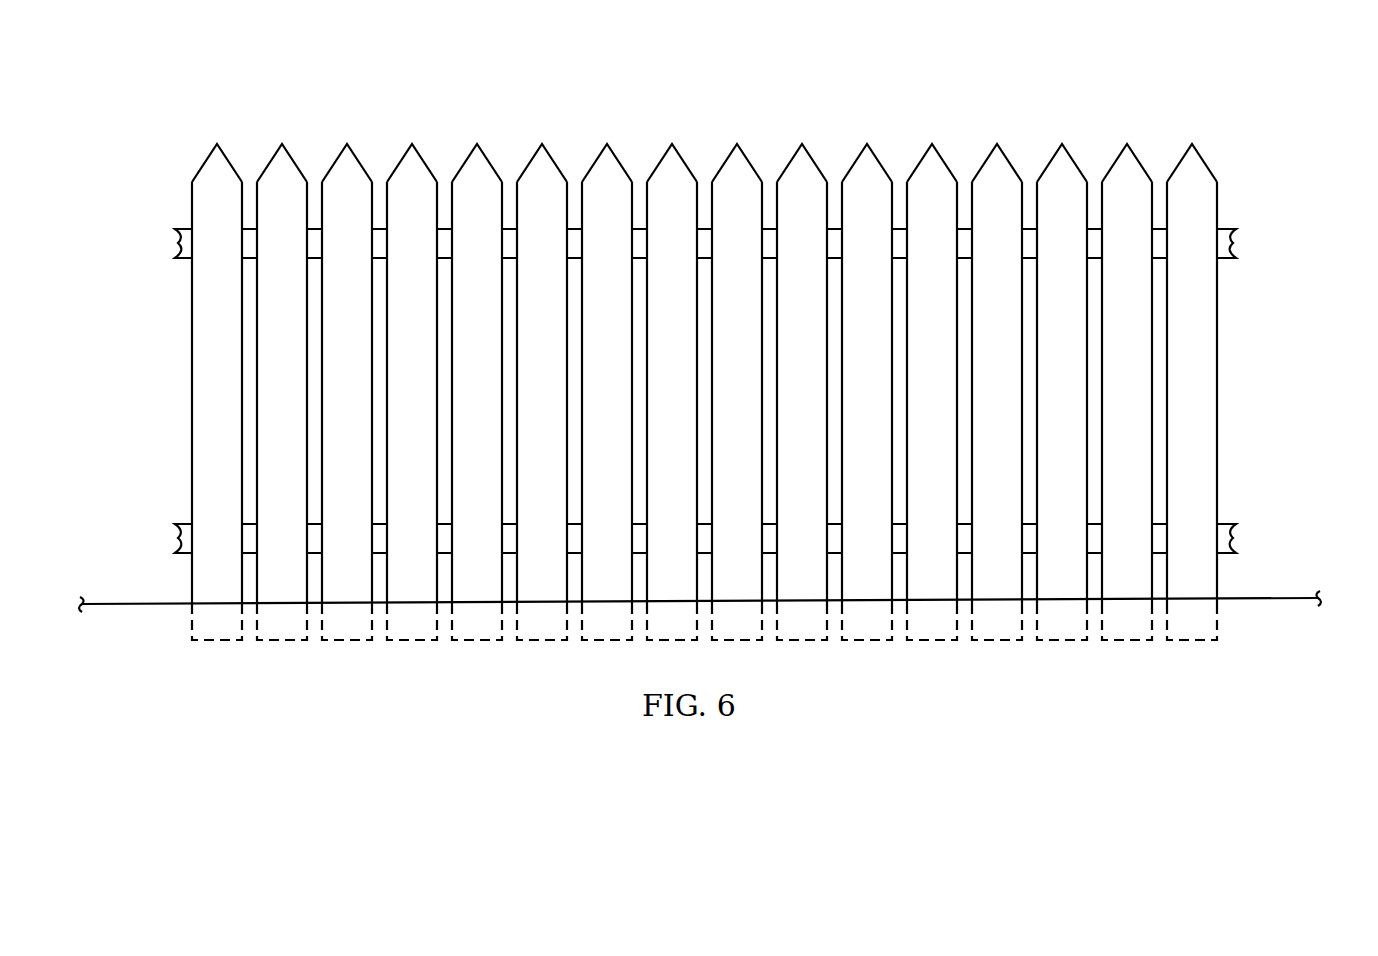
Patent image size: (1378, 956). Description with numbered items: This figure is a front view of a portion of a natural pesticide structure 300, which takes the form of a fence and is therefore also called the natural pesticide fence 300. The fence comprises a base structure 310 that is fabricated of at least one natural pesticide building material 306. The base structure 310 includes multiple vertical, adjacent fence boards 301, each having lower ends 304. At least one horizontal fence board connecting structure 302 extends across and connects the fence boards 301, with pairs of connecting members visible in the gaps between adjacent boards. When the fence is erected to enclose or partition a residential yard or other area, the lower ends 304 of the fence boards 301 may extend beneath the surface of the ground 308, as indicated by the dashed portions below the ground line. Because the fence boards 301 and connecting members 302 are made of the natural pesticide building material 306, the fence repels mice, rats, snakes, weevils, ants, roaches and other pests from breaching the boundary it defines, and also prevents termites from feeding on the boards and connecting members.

The natural pesticide structure 300 is at (238, 90).
The fence boards 301 is at (542, 162).
The horizontal fence board connecting structure 302 is at (190, 263).
The lower ends 304 is at (937, 640).
The natural pesticide building material 306 is at (191, 379).
The ground 308 is at (1264, 592).
The base structure 310 is at (191, 478).